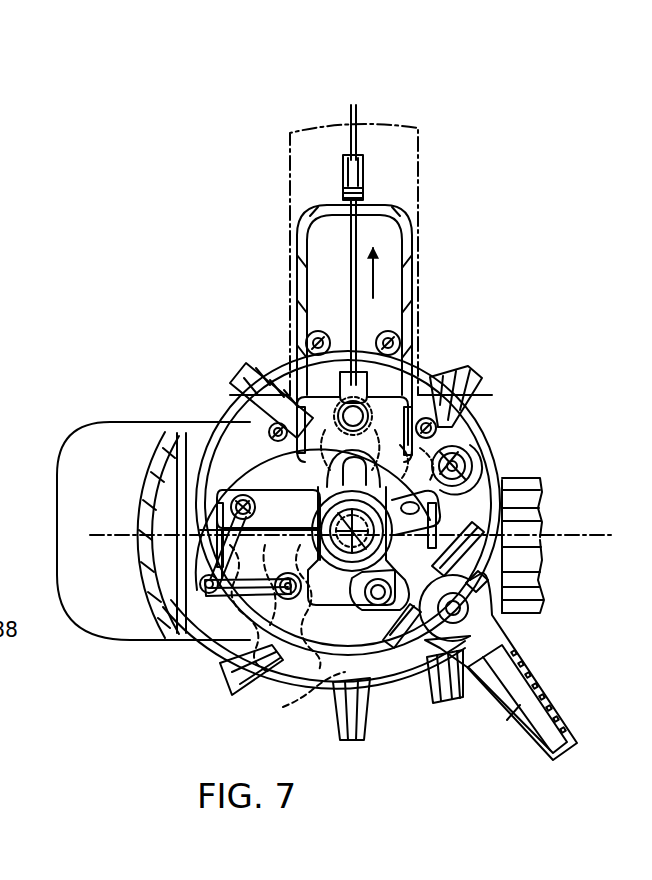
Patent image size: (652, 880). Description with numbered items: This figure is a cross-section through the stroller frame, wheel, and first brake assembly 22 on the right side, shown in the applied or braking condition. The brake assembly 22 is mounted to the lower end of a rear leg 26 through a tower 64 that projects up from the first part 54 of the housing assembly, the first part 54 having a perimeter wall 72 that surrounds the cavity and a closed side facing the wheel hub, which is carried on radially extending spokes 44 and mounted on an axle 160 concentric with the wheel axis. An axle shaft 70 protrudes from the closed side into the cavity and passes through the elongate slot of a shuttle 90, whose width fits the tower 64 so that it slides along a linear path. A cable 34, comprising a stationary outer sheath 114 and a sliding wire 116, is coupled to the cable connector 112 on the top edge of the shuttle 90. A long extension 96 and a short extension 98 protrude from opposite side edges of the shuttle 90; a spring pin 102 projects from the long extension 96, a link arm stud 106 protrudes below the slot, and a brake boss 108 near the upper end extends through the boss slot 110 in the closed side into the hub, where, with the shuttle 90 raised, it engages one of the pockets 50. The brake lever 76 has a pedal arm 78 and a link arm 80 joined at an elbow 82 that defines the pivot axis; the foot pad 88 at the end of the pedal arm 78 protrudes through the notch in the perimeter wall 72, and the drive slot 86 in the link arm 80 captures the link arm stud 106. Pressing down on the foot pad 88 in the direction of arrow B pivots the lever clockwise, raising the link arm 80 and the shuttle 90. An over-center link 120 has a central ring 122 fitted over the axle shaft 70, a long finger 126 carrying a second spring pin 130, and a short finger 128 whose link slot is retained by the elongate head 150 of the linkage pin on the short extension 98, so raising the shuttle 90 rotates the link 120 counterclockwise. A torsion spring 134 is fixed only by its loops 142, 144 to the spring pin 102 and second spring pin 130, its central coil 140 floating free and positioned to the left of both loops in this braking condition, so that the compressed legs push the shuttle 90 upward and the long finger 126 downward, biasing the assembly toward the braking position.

The first brake assembly 22 is at (578, 300).
The rear leg 26 is at (418, 150).
The cable 34 is at (376, 163).
The spokes 44 is at (433, 710).
The pockets 50 is at (331, 576).
The first part 54 is at (500, 464).
The tower 64 is at (300, 207).
The axle shaft 70 is at (351, 552).
The perimeter wall 72 is at (333, 600).
The brake lever 76 is at (541, 768).
The pedal arm 78 is at (487, 628).
The link arm 80 is at (348, 600).
The elbow 82 is at (490, 585).
The drive slot 86 is at (378, 606).
The foot pad 88 is at (562, 730).
The shuttle 90 is at (348, 497).
The long extension 96 is at (178, 428).
The short extension 98 is at (462, 490).
The spring pin 102 is at (232, 505).
The link arm stud 106 is at (357, 612).
The brake boss 108 is at (338, 398).
The boss slot 110 is at (304, 510).
The cable connector 112 is at (298, 378).
The outer sheath 114 is at (343, 172).
The wire 116 is at (358, 237).
The over-center link 120 is at (305, 456).
The central ring 122 is at (445, 575).
The long finger 126 is at (200, 558).
The short finger 128 is at (497, 405).
The second spring pin 130 is at (234, 668).
The torsion spring 134 is at (196, 604).
The central coil 140 is at (202, 592).
The loop 142 is at (200, 552).
The loop 144 is at (196, 602).
The elongate head 150 is at (438, 522).
The axle 160 is at (402, 494).